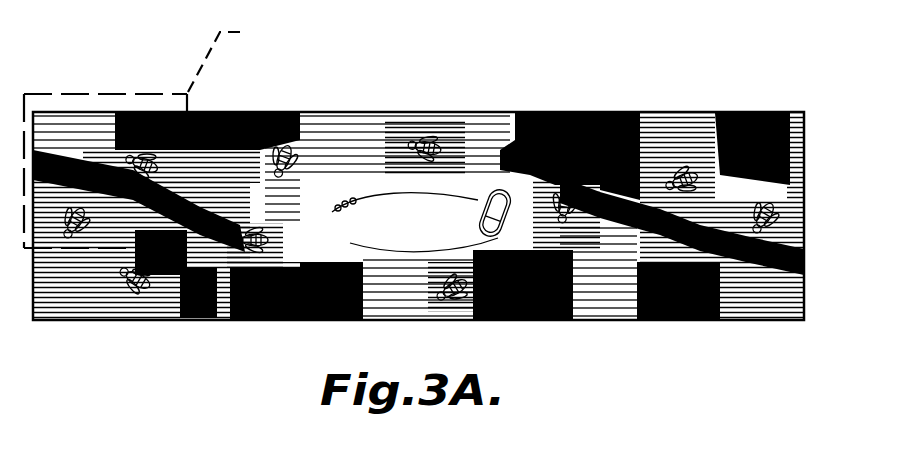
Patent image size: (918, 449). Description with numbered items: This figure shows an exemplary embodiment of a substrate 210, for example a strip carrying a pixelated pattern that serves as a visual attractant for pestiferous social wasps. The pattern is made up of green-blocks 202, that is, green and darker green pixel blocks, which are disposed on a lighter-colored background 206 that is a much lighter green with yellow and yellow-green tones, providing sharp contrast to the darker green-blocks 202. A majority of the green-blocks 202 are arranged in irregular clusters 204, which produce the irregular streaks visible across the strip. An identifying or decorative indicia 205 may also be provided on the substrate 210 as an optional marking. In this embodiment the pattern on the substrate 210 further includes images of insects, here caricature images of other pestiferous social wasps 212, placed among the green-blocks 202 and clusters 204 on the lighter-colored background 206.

The green-blocks 202 is at (215, 112).
The irregular clusters 204 is at (80, 165).
The identifying or decorative indicia 205 is at (388, 192).
The lighter-colored background 206 is at (507, 190).
The substrate 210 is at (178, 54).
The caricature images of pestiferous social wasps 212 is at (258, 240).